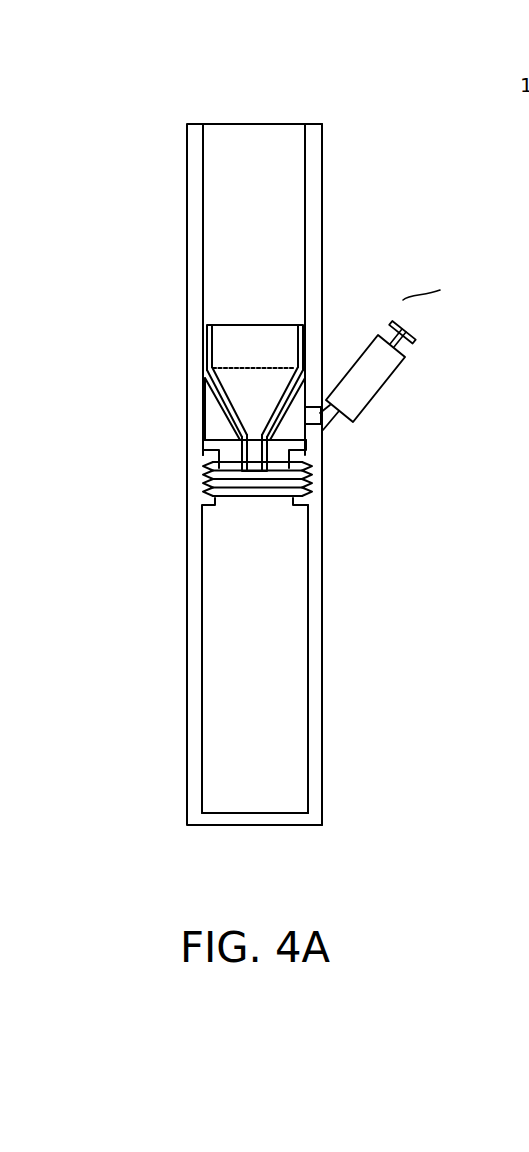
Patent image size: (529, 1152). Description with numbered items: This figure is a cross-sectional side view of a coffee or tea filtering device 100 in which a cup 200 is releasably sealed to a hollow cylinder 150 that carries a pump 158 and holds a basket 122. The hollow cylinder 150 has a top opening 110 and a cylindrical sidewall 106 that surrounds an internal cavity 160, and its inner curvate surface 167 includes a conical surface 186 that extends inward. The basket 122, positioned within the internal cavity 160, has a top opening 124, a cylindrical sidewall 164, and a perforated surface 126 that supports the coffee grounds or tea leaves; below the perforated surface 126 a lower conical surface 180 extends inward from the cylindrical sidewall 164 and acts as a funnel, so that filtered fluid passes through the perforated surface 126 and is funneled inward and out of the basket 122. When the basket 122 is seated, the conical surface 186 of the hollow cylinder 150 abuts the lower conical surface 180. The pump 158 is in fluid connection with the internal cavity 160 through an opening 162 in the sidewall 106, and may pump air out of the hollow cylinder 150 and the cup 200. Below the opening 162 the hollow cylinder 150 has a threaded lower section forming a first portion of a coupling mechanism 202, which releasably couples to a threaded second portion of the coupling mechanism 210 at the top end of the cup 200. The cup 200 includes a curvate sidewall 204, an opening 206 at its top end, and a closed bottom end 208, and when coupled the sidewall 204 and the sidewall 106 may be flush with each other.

The coffee or tea filtering device 100 is at (128, 59).
The top opening 110 is at (269, 107).
The cylindrical sidewall 106 is at (311, 212).
The hollow cylinder 150 is at (160, 195).
The inner curvate surface 167 is at (205, 160).
The internal cavity 160 is at (273, 271).
The basket 122 is at (215, 324).
The cylindrical sidewall 164 is at (213, 350).
The perforated surface 126 is at (262, 372).
The top opening 124 is at (231, 305).
The lower conical surface 180 is at (222, 420).
The conical surface 186 is at (225, 407).
The opening 206 is at (274, 497).
The first portion of the coupling mechanism 202 is at (187, 478).
The second portion of the coupling mechanism 210 is at (334, 480).
The cup 200 is at (129, 650).
The curvate sidewall 204 is at (317, 667).
The closed bottom end 208 is at (243, 813).
The opening 162 is at (333, 426).
The pump 158 is at (405, 401).